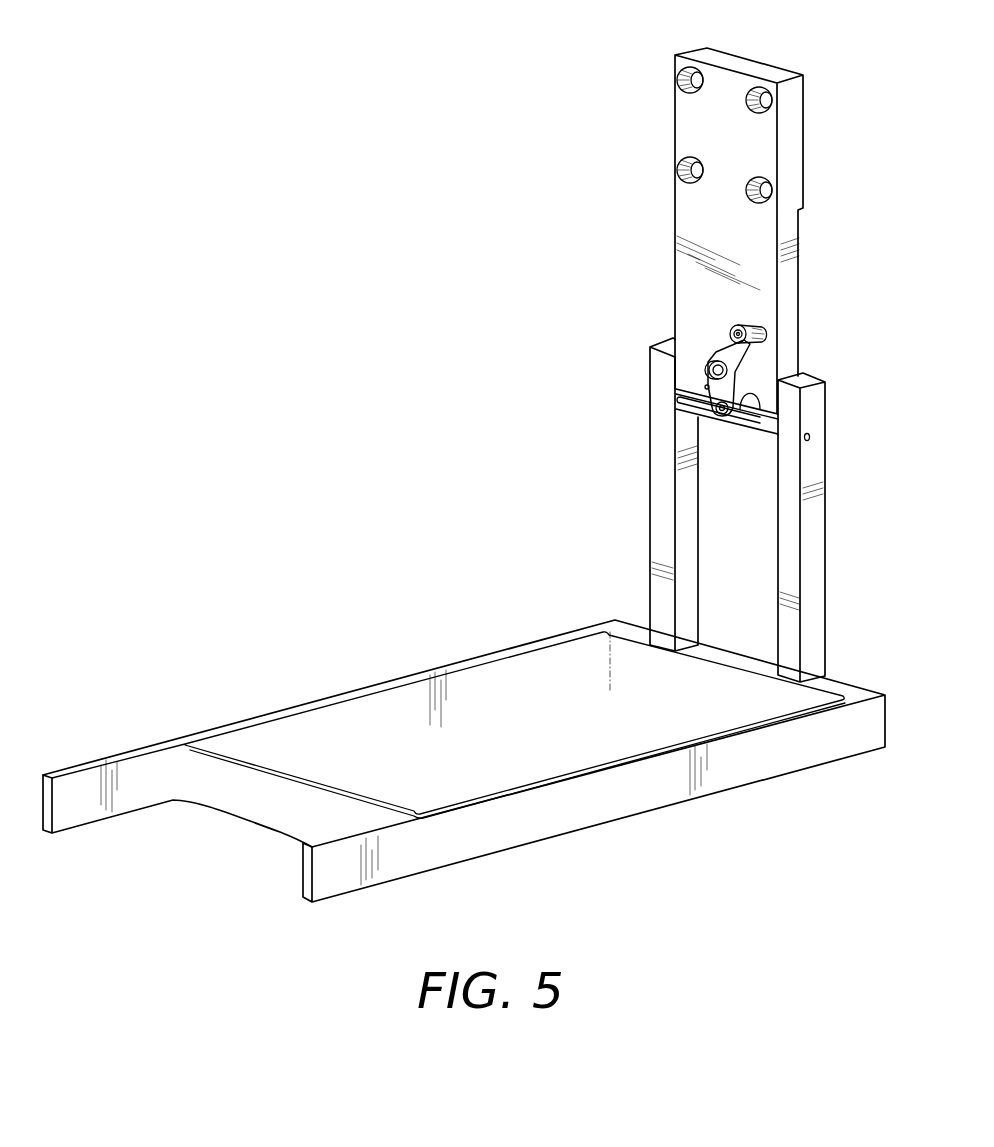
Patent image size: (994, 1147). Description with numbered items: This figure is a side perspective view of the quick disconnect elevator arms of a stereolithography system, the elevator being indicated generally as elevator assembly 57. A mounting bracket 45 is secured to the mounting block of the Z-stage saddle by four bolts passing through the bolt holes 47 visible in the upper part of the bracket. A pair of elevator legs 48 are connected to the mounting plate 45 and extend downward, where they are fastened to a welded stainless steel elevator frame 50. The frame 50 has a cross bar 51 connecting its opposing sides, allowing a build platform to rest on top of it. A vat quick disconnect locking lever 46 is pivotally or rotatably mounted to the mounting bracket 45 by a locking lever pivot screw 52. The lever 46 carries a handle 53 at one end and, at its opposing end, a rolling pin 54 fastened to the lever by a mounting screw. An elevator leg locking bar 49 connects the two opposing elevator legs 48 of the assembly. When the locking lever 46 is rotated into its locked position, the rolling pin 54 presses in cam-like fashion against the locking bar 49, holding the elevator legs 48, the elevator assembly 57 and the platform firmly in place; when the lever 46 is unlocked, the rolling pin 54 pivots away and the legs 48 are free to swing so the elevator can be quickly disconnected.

The mounting bracket 45 is at (804, 138).
The vat quick disconnect locking lever 46 is at (722, 350).
The bolt holes 47 is at (677, 171).
The elevator legs 48 is at (650, 450).
The elevator leg locking bar 49 is at (753, 431).
The elevator frame 50 is at (555, 812).
The cross bar 51 is at (250, 820).
The locking lever pivot screw 52 is at (708, 371).
The handle 53 is at (746, 326).
The rolling pin 54 is at (722, 414).
The elevator 57 is at (586, 592).